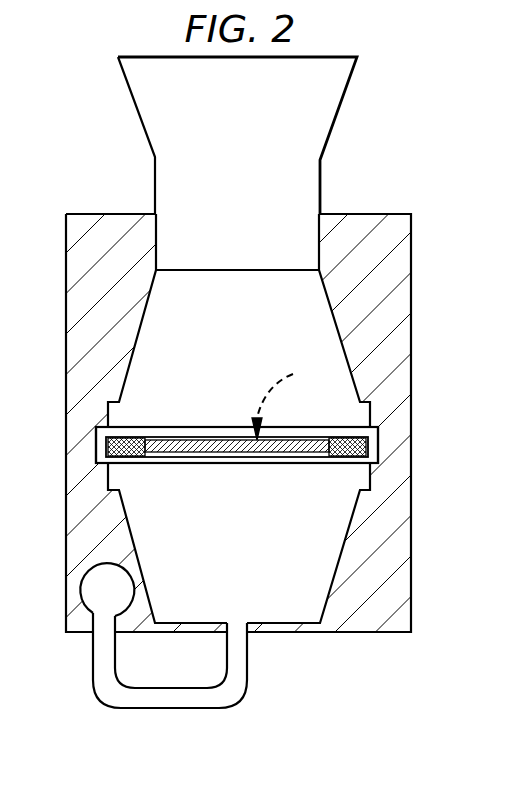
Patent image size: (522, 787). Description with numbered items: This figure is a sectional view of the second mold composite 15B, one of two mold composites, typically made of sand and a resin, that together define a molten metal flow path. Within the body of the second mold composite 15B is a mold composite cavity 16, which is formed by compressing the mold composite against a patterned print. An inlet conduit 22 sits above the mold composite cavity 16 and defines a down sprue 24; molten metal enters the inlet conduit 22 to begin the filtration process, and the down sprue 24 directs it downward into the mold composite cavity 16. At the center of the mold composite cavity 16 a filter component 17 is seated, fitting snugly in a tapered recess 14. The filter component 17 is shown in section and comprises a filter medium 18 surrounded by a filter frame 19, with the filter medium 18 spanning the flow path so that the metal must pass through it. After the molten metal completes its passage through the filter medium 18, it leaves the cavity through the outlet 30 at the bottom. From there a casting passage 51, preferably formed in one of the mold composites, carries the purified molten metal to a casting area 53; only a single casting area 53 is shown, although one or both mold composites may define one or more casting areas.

The tapered recess 14 is at (380, 447).
The second mold composite 15B is at (398, 318).
The mold composite cavity 16 is at (182, 344).
The filter component 17 is at (285, 400).
The filter medium 18 is at (168, 453).
The filter frame 19 is at (355, 457).
The inlet conduit 22 is at (340, 110).
The down sprue 24 is at (249, 144).
The outlet 30 is at (280, 623).
The casting passage 51 is at (167, 708).
The casting area 53 is at (125, 613).